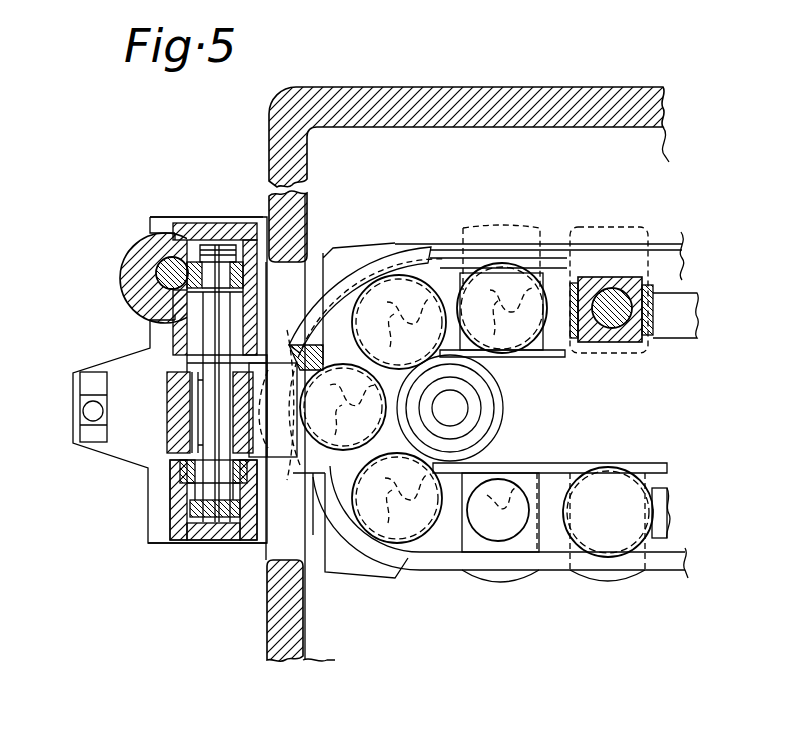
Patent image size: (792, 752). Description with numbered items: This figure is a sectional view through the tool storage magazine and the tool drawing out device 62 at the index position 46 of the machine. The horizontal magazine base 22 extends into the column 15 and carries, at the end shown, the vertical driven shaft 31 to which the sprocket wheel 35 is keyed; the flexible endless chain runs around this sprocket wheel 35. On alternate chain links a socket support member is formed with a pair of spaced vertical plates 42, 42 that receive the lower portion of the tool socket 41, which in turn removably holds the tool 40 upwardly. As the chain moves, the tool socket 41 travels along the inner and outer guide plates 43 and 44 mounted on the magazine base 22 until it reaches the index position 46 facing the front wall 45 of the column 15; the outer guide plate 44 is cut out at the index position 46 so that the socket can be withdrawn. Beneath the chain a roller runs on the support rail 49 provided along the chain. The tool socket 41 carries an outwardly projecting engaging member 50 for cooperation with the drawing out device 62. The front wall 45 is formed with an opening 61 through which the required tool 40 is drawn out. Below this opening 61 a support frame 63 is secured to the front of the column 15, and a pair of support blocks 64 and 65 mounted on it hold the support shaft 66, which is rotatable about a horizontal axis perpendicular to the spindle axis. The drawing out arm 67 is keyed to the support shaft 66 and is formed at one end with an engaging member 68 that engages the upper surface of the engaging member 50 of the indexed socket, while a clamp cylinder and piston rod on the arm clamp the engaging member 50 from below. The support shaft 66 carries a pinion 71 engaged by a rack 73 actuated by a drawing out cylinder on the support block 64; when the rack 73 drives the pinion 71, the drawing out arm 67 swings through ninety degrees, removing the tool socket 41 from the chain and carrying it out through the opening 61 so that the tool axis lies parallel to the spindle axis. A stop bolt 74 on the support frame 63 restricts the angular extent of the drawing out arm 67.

The column 15 is at (557, 100).
The magazine base 22 is at (688, 240).
The driven shaft 31 is at (463, 410).
The sprocket wheel 35 is at (530, 356).
The tool 40 is at (405, 300).
The tool socket 41 is at (438, 300).
The vertical plates 42 is at (571, 288).
The inner guide plate 43 is at (577, 463).
The outer guide plate 44 is at (555, 557).
The front wall 45 is at (280, 622).
The index position 46 is at (345, 498).
The support rail 49 is at (698, 296).
The engaging member 50 is at (374, 256).
The opening 61 is at (267, 552).
The tool drawing out device 62 is at (175, 552).
The support frame 63 is at (142, 453).
The support block 64 is at (167, 308).
The support block 65 is at (178, 503).
The support shaft 66 is at (207, 395).
The drawing out arm 67 is at (170, 423).
The engaging member 68 is at (290, 363).
The pinion 71 is at (247, 277).
The rack 73 is at (139, 272).
The stop bolt 74 is at (80, 410).